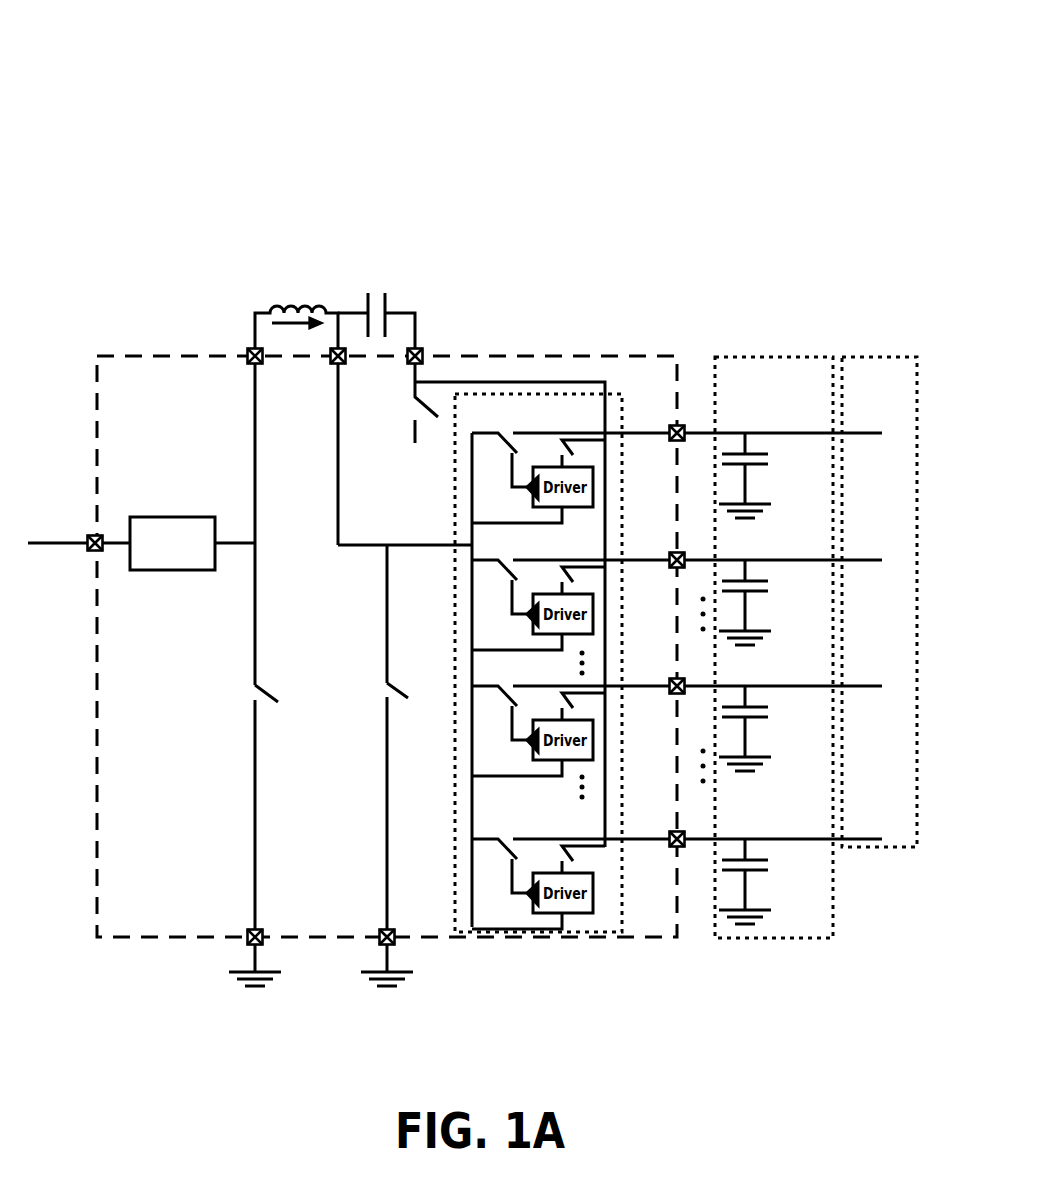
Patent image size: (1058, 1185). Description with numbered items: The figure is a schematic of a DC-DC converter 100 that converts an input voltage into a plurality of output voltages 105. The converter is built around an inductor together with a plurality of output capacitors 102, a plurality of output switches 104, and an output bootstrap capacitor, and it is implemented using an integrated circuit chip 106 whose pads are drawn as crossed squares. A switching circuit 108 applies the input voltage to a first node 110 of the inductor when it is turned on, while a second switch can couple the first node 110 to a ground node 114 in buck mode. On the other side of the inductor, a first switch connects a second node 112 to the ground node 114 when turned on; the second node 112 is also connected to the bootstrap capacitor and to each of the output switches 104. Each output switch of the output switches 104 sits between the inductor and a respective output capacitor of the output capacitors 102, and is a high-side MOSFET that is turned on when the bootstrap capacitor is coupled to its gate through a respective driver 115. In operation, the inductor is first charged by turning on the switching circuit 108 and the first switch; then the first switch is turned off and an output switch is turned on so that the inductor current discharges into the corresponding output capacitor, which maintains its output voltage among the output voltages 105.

The DC-DC converter 100 is at (900, 48).
The plurality of output capacitors 102 is at (740, 357).
The plurality of output switches 104 is at (615, 393).
The plurality of output voltages 105 is at (845, 357).
The integrated circuit chip 106 is at (538, 355).
The switching circuit 108 is at (199, 563).
The first node 110 is at (253, 545).
The second node 112 is at (387, 545).
The ground node 114 is at (378, 930).
The driver 115 is at (528, 750).